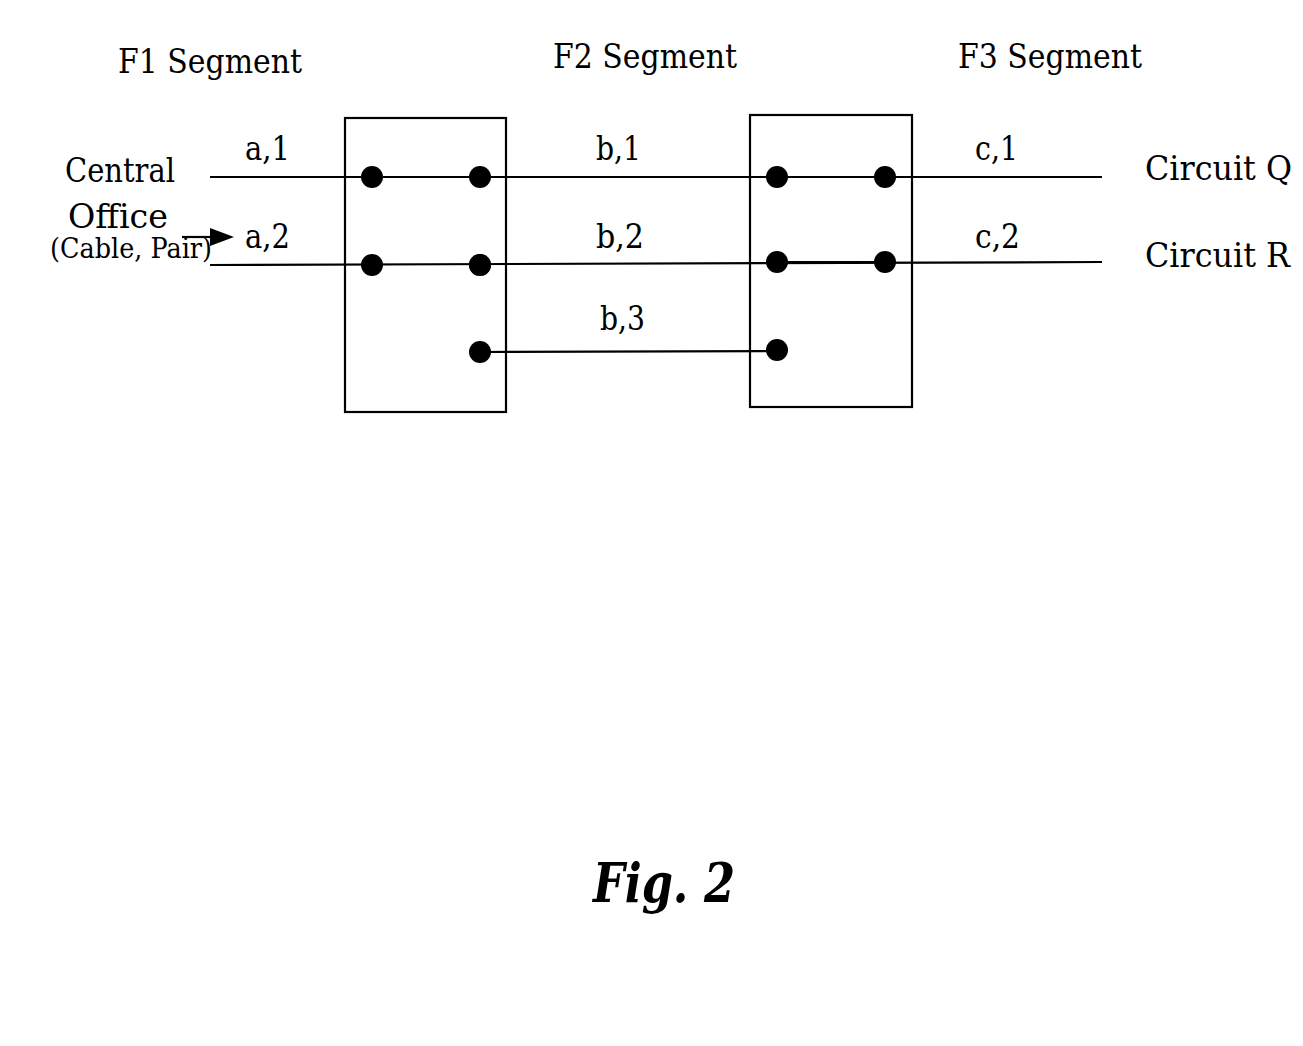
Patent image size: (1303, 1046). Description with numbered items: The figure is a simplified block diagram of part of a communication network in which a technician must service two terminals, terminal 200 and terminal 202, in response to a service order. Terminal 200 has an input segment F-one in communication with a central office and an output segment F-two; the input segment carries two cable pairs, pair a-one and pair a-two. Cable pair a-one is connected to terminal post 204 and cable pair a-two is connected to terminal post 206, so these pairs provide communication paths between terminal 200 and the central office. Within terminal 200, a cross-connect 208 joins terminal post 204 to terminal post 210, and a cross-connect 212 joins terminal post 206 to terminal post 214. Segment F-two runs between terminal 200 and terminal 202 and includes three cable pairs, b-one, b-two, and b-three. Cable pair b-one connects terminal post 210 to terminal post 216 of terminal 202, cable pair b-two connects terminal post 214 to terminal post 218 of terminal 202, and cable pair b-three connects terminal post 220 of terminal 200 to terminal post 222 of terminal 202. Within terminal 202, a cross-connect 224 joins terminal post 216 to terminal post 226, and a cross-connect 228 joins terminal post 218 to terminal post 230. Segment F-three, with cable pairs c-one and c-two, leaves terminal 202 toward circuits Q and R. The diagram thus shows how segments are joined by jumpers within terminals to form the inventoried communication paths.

The terminal 200 is at (447, 303).
The terminal 202 is at (853, 300).
The terminal post 204 is at (360, 176).
The terminal post 206 is at (370, 273).
The cross-connect 208 is at (435, 176).
The terminal post 210 is at (470, 175).
The cross-connect 212 is at (480, 272).
The terminal post 214 is at (482, 273).
The terminal post 216 is at (785, 175).
The terminal post 218 is at (775, 270).
The terminal post 220 is at (482, 360).
The terminal post 222 is at (775, 358).
The cross-connect 224 is at (815, 175).
The terminal post 226 is at (890, 175).
The cross-connect 228 is at (828, 264).
The terminal post 230 is at (887, 270).